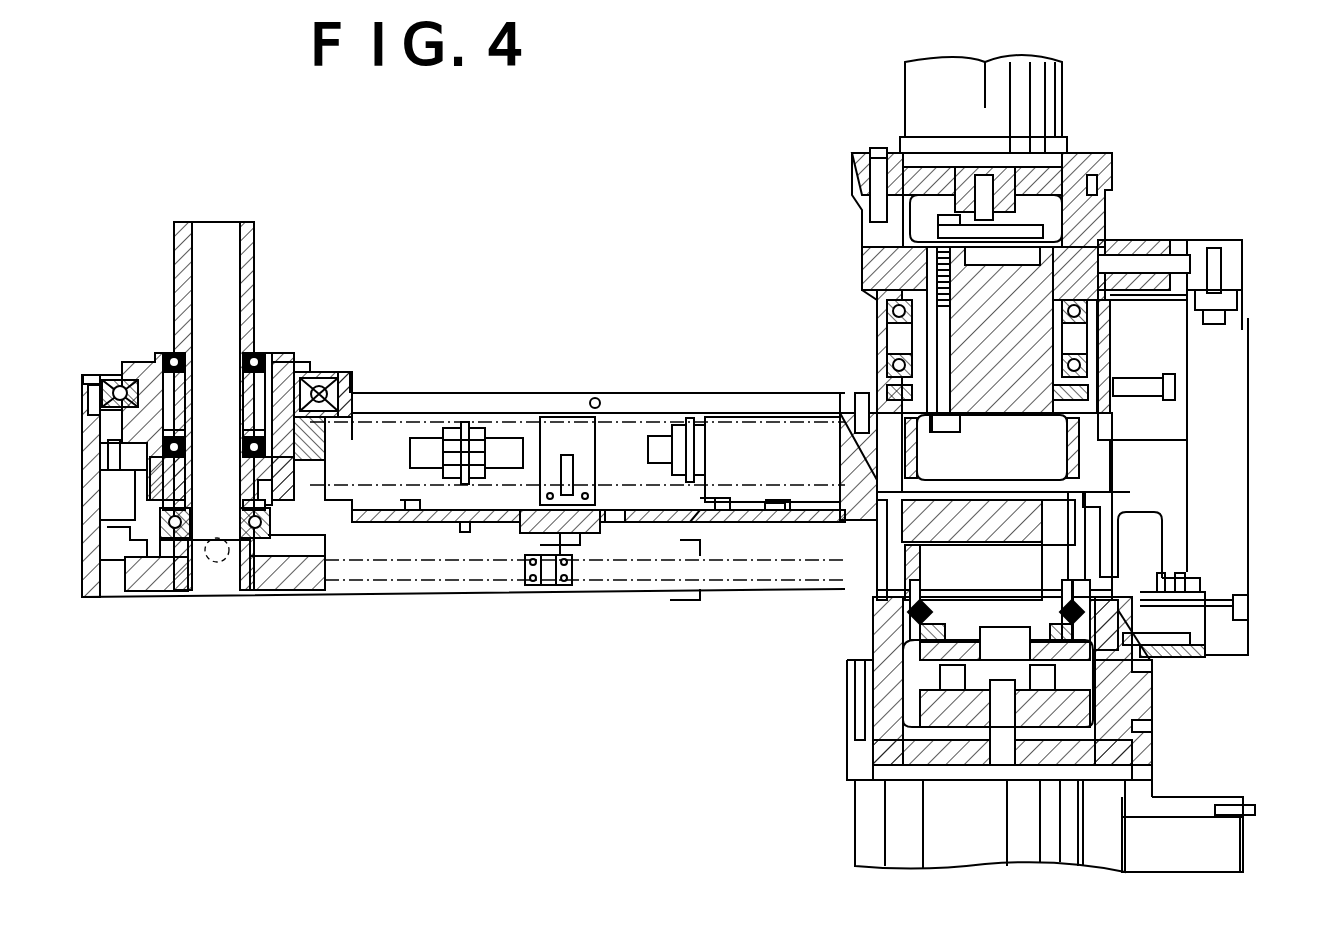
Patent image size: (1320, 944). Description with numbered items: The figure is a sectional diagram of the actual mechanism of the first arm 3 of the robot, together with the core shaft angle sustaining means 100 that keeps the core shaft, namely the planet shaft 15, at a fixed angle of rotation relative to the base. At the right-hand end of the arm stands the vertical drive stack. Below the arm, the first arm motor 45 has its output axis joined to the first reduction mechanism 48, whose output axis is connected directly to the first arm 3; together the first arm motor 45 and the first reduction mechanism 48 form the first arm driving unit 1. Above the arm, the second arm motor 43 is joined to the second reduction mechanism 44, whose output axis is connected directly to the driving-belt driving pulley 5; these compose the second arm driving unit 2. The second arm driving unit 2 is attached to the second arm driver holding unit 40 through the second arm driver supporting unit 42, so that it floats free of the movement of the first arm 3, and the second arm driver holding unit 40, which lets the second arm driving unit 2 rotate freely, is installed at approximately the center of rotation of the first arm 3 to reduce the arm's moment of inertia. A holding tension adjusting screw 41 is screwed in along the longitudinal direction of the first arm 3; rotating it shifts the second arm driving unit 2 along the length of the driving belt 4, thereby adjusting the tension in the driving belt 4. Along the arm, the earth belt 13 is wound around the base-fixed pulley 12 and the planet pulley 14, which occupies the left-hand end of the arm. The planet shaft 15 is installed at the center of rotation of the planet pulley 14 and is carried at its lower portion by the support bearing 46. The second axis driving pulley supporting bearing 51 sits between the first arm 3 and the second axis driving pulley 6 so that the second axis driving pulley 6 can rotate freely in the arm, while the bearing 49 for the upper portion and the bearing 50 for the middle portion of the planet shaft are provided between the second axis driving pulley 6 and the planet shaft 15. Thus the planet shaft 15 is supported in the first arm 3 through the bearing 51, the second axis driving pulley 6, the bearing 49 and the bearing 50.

The core shaft angle sustaining means 100 is at (528, 652).
The first arm driving unit 1 is at (1216, 672).
The second arm driving unit 2 is at (789, 82).
The first arm 3 is at (470, 585).
The driving belt 4 is at (738, 420).
The driving-belt driving pulley 5 is at (1112, 462).
The second axis driving pulley 6 is at (112, 455).
The base-fixed pulley 12 is at (1150, 555).
The earth belt 13 is at (684, 590).
The planet pulley 14 is at (295, 578).
The planet shaft 15 is at (255, 255).
The second arm driver holding unit 40 is at (1098, 333).
The holding tension adjusting screw 41 is at (1175, 382).
The second arm driver supporting unit 42 is at (1108, 268).
The second arm motor 43 is at (905, 110).
The second reduction mechanism 44 is at (870, 185).
The first arm motor 45 is at (1100, 805).
The support bearing 46 is at (178, 540).
The first reduction mechanism 48 is at (1092, 708).
The bearing for supporting the upper portion of the planet shaft 49 is at (170, 352).
The bearing for supporting the middle portion of the planet shaft 50 is at (118, 430).
The second axis driving pulley supporting bearing 51 is at (324, 372).